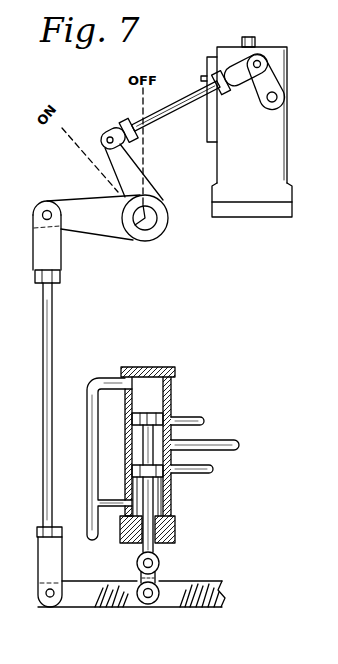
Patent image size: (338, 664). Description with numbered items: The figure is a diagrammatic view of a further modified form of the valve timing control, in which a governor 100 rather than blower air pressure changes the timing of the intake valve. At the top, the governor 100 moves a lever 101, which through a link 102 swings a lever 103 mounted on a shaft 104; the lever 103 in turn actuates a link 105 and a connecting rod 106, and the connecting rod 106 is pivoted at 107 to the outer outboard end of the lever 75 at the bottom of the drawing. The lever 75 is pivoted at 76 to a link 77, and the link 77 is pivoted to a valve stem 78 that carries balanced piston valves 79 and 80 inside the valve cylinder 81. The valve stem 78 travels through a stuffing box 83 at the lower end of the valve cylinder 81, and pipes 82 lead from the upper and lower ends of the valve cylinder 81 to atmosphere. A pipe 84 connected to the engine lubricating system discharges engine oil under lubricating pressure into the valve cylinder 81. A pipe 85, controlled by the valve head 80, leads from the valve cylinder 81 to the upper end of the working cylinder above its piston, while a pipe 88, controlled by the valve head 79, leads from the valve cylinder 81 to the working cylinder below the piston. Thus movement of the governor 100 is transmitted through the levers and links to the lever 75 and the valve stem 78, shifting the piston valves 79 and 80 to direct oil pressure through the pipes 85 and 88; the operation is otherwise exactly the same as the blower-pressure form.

The lever 75 is at (184, 607).
The pivot 76 is at (148, 606).
The link 77 is at (158, 574).
The valve stem 78 is at (165, 507).
The piston valve 79 is at (160, 480).
The piston valve 80 is at (150, 414).
The valve cylinder 81 is at (150, 366).
The pipes 82 is at (93, 540).
The stuffing box 83 is at (176, 532).
The pipe 84 is at (224, 442).
The pipe 85 is at (188, 418).
The pipe 88 is at (206, 474).
The governor 100 is at (268, 128).
The lever 101 is at (270, 70).
The link 102 is at (179, 108).
The lever 103 is at (130, 173).
The shaft 104 is at (150, 223).
The link 105 is at (107, 228).
The connecting rod 106 is at (52, 333).
The pivot 107 is at (50, 602).